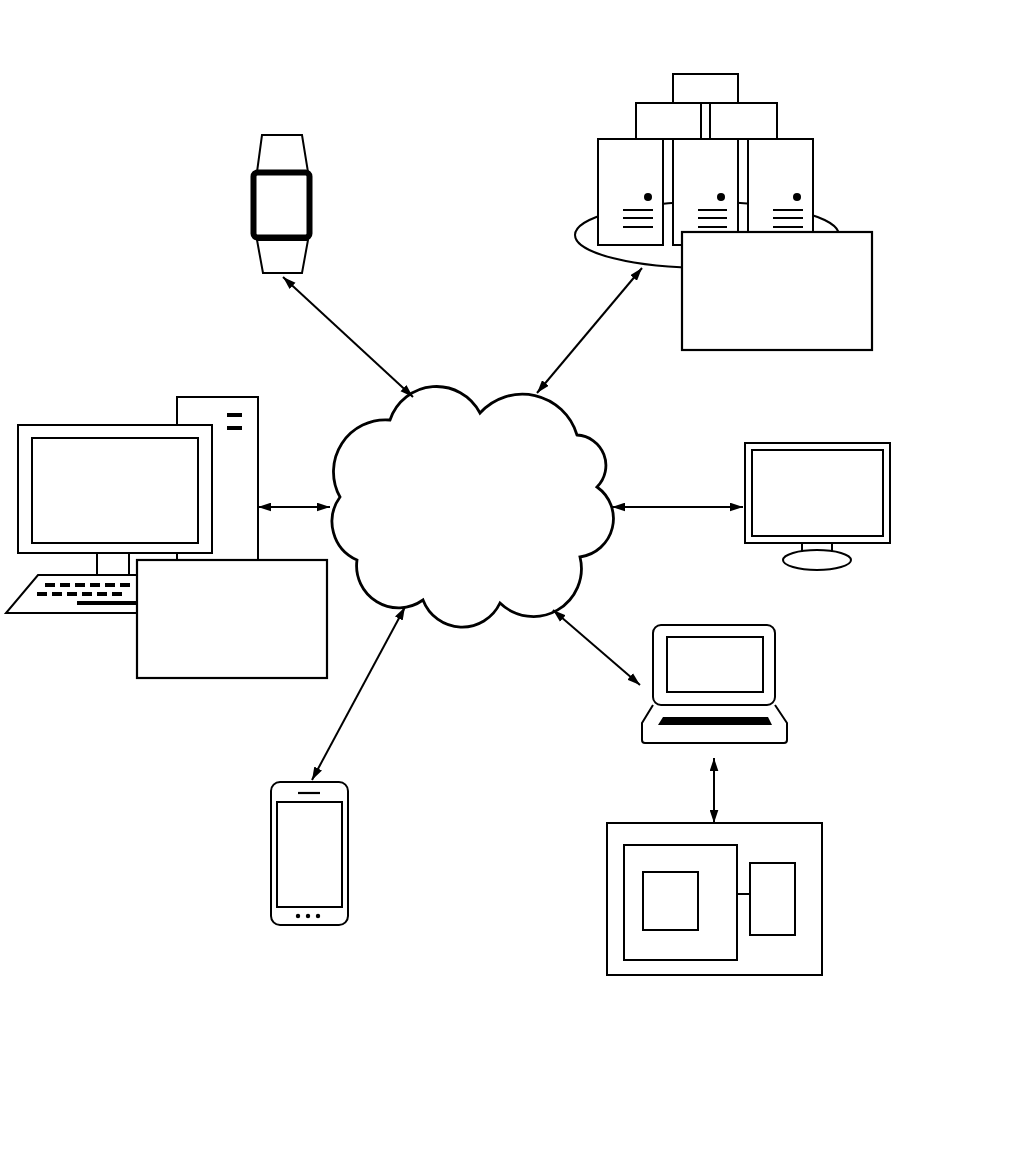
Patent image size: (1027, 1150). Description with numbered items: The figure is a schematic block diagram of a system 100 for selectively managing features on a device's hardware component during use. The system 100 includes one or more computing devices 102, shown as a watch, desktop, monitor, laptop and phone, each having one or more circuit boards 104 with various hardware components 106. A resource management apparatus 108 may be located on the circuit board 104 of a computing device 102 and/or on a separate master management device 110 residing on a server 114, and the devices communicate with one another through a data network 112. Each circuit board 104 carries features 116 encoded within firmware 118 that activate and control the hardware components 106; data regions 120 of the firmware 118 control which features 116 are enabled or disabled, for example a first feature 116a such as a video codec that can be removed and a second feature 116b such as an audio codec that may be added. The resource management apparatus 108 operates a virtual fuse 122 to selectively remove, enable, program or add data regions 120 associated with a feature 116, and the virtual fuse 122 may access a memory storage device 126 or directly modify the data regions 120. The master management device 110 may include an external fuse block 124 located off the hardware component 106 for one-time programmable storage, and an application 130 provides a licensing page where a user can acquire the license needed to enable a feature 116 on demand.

The system 100 is at (108, 60).
The computing device 102 is at (253, 170).
The circuit board 104 is at (715, 901).
The hardware component 106 is at (680, 843).
The resource management apparatus 108 is at (722, 212).
The master management device 110 is at (722, 171).
The data network 112 is at (500, 545).
The server 114 is at (598, 193).
The feature 116 is at (817, 434).
The first feature 116a is at (305, 858).
The second feature 116b is at (303, 933).
The firmware 118 is at (622, 898).
The data region 120 is at (670, 900).
The virtual fuse 122 is at (672, 932).
The external fuse block 124 is at (803, 170).
The memory storage device 126 is at (795, 900).
The application 130 is at (150, 438).